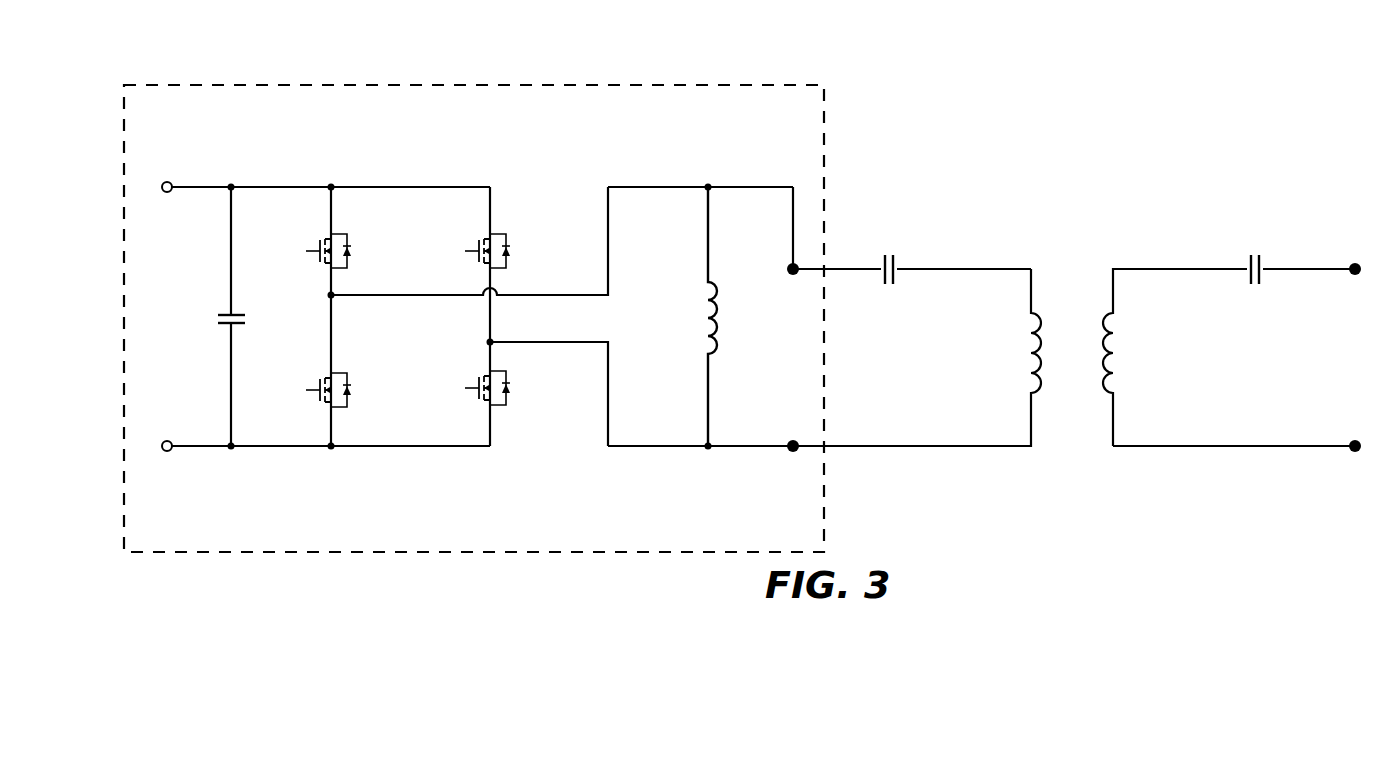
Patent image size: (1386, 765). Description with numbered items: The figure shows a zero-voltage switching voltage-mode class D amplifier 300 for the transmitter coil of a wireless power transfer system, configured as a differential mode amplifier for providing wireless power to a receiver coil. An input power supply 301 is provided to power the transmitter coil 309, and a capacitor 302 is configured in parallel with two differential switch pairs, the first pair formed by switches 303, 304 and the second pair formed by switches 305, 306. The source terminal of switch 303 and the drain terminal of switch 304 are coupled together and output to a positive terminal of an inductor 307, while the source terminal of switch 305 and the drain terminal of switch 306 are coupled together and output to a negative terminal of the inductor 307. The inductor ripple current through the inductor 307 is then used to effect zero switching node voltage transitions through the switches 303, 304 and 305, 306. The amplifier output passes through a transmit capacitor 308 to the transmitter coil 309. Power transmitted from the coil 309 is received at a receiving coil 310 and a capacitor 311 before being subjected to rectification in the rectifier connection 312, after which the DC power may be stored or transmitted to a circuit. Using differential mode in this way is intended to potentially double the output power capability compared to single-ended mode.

The wireless power transmitter system 300 is at (647, 76).
The input power supply 301 is at (474, 316).
The capacitor 302 is at (256, 317).
The switch 303 is at (330, 241).
The switch 304 is at (330, 372).
The switch 305 is at (489, 266).
The switch 306 is at (489, 394).
The inductor 307 is at (686, 317).
The transmit capacitor CTX 308 is at (909, 319).
The transmitter coil 309 is at (922, 340).
The receiving coil 310 is at (1172, 340).
The capacitor 311 is at (1293, 286).
The rectification 312 is at (1246, 357).